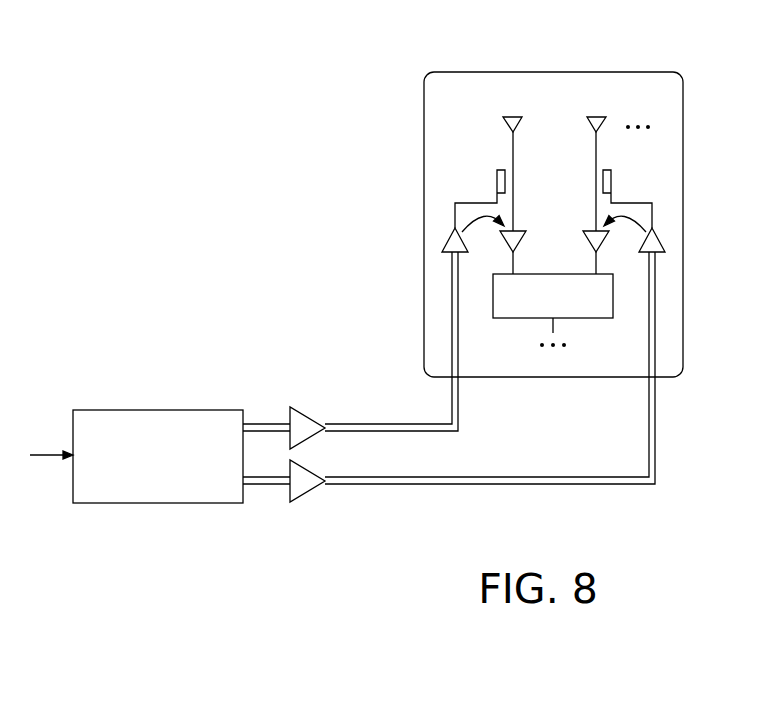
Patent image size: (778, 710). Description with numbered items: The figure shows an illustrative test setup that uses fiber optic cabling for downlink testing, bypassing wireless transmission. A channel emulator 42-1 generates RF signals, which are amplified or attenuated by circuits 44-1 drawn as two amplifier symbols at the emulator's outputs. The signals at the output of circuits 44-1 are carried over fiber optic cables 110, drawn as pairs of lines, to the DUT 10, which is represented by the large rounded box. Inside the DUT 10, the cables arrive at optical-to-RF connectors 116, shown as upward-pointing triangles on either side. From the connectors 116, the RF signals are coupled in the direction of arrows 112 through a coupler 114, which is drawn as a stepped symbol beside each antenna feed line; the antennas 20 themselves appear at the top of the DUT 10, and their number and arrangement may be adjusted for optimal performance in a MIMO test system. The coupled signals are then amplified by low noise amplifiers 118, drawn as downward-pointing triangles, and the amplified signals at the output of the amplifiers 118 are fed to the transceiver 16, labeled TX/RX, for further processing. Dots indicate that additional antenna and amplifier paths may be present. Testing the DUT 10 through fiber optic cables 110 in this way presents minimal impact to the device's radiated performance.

The DUT 10 is at (430, 68).
The antennas 20 is at (592, 116).
The arrows 112 is at (611, 216).
The coupler 114 is at (499, 160).
The low noise amplifiers 118 is at (579, 236).
The optical-to-RF connectors 116 is at (449, 233).
The transceiver 16 is at (520, 318).
The fiber optic cables 110 is at (458, 406).
The circuits 44-1 is at (307, 417).
The channel emulator 42-1 is at (171, 410).